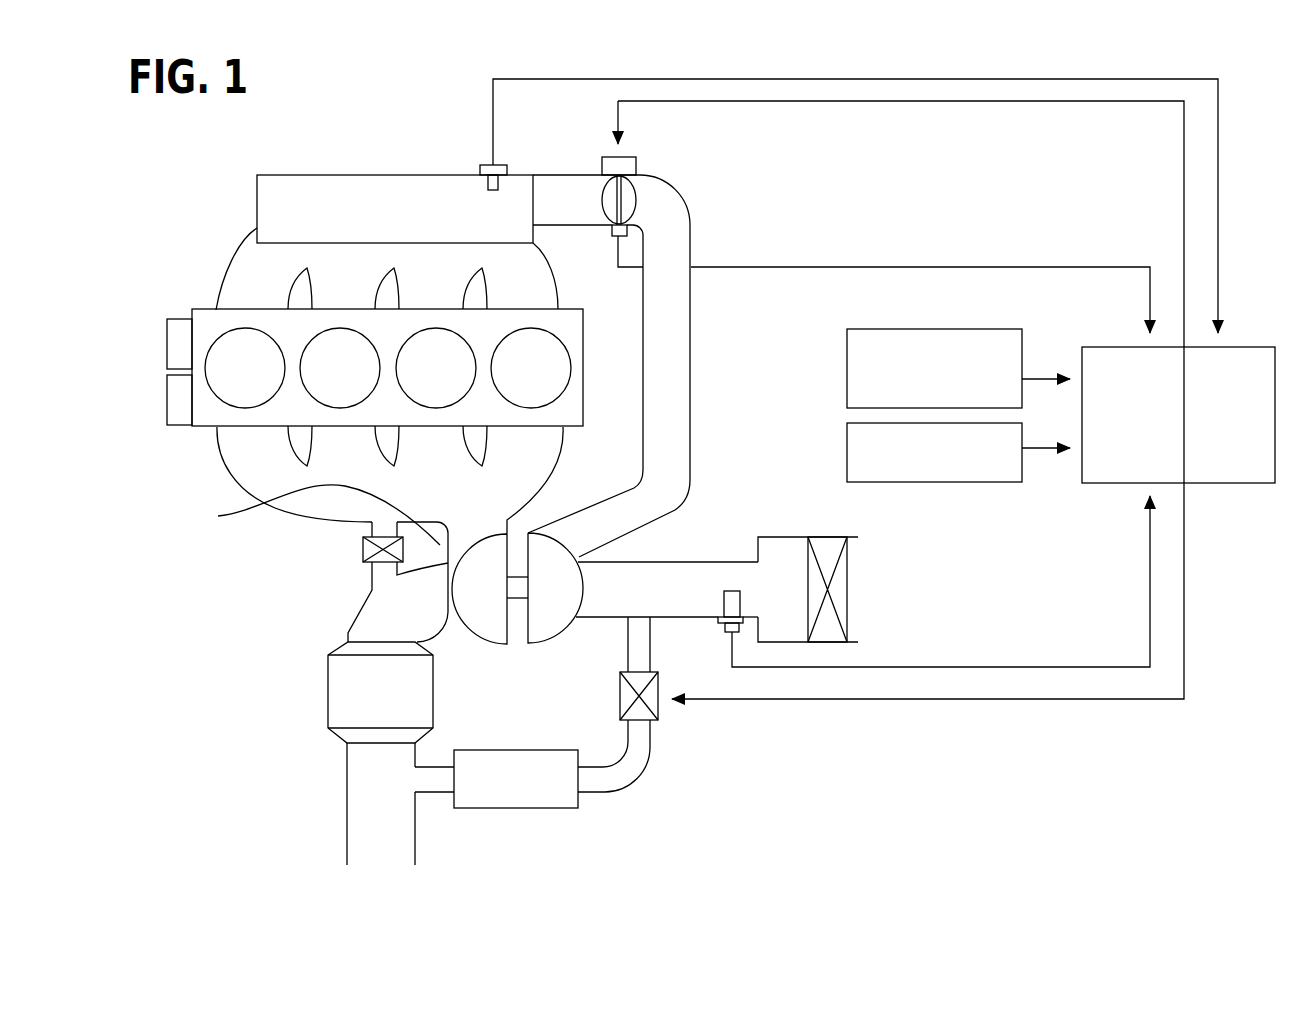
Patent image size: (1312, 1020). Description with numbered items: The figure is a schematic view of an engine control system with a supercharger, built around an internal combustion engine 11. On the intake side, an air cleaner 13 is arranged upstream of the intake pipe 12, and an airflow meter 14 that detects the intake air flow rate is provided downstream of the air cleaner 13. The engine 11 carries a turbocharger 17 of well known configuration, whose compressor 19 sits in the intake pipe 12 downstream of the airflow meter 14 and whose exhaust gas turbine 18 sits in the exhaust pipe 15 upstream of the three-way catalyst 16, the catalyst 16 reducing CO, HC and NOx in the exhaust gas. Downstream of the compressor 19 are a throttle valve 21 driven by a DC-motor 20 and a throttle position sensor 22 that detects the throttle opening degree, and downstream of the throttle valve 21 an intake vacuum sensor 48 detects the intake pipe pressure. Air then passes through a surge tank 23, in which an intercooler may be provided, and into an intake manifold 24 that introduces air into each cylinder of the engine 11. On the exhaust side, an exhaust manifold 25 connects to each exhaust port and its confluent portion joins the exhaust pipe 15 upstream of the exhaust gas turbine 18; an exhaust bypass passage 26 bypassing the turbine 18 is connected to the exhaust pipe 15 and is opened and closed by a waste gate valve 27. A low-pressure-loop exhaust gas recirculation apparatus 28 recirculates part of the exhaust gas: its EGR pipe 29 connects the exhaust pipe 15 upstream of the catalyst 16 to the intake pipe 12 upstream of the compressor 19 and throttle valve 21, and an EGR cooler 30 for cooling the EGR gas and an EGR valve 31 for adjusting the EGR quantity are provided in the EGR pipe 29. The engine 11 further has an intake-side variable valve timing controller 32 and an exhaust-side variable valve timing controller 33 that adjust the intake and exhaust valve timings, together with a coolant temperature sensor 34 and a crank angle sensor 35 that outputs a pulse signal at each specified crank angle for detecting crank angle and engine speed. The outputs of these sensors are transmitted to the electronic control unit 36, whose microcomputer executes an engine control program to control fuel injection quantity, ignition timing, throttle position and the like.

The internal combustion engine 11 is at (198, 305).
The intake pipe 12 is at (691, 330).
The air cleaner 13 is at (848, 588).
The airflow meter 14 is at (724, 600).
The exhaust pipe 15 is at (347, 801).
The three-way catalyst 16 is at (328, 691).
The turbocharger 17 is at (517, 652).
The exhaust gas turbine 18 is at (474, 636).
The compressor 19 is at (558, 636).
The DC-motor 20 is at (638, 165).
The throttle valve 21 is at (638, 201).
The throttle position sensor 22 is at (617, 238).
The surge tank 23 is at (384, 175).
The intake manifold 24 is at (226, 263).
The exhaust manifold 25 is at (223, 470).
The exhaust bypass passage 26 is at (363, 530).
The waste gate valve 27 is at (363, 550).
The exhaust gas recirculation apparatus 28 is at (645, 787).
The EGR pipe 29 is at (607, 793).
The EGR cooler 30 is at (520, 809).
The EGR valve 31 is at (660, 721).
The intake-side variable valve timing controller 32 is at (167, 345).
The exhaust-side variable valve timing controller 33 is at (167, 398).
The coolant temperature sensor 34 is at (847, 374).
The crank angle sensor 35 is at (847, 440).
The electronic control unit 36 is at (1248, 347).
The intake vacuum sensor 48 is at (486, 164).